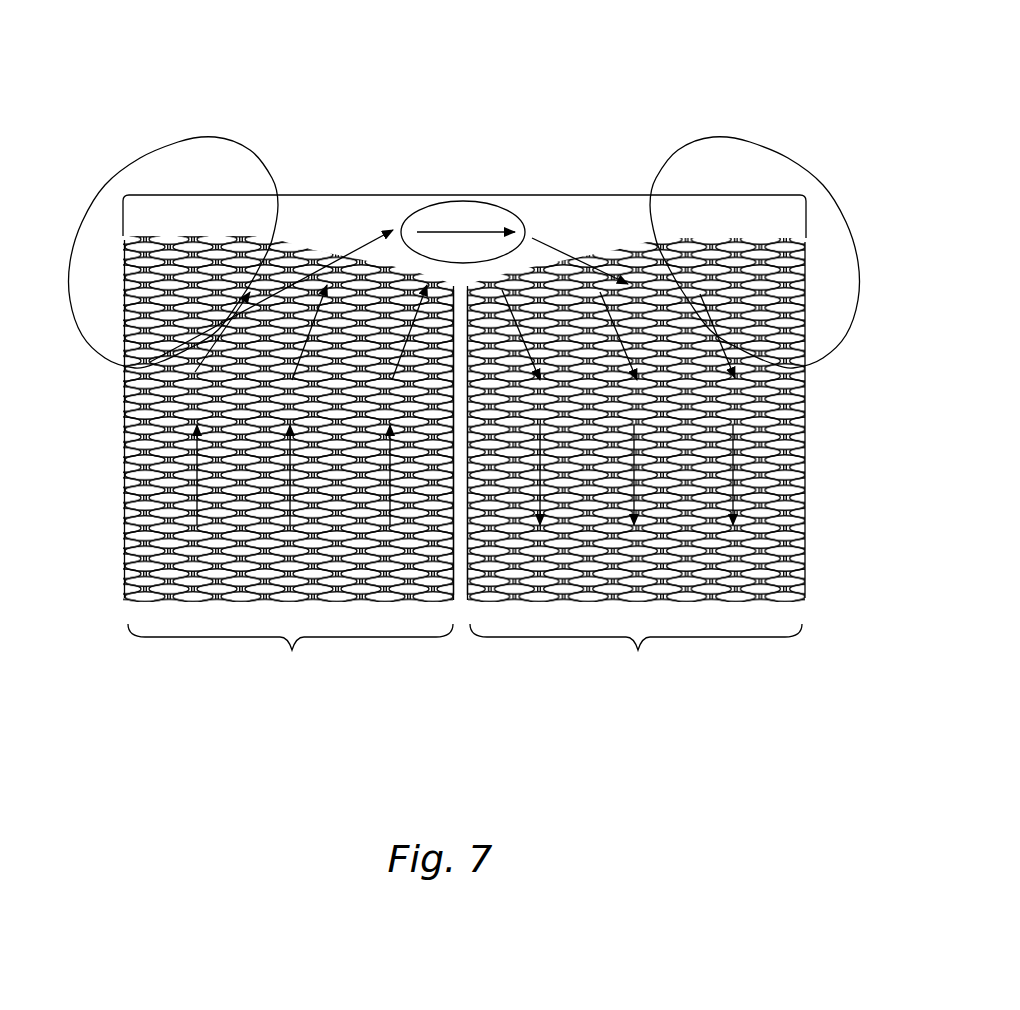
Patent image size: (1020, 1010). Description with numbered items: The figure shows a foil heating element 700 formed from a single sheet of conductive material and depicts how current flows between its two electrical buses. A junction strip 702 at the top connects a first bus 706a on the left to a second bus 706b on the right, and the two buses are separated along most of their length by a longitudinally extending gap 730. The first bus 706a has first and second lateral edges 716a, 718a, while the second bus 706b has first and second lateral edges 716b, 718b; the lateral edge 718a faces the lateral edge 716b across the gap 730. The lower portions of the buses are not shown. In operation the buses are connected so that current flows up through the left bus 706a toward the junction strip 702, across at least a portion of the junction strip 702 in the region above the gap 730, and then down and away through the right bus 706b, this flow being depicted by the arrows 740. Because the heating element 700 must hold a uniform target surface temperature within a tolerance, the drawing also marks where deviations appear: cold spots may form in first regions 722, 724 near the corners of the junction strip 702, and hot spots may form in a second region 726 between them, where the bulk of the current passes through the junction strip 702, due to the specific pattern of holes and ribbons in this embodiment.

The heating element 700 is at (58, 41).
The junction strip 702 is at (333, 216).
The first bus 706a is at (288, 465).
The second bus 706b is at (636, 466).
The first lateral edge of first bus 716a is at (125, 455).
The first lateral edge of second bus 716b is at (468, 585).
The second lateral edge of first bus 718a is at (458, 585).
The second lateral edge of second bus 718b is at (806, 460).
The first region 722 is at (215, 137).
The first region 724 is at (710, 137).
The second region 726 is at (500, 204).
The gap 730 is at (460, 287).
The arrows 740 is at (430, 231).